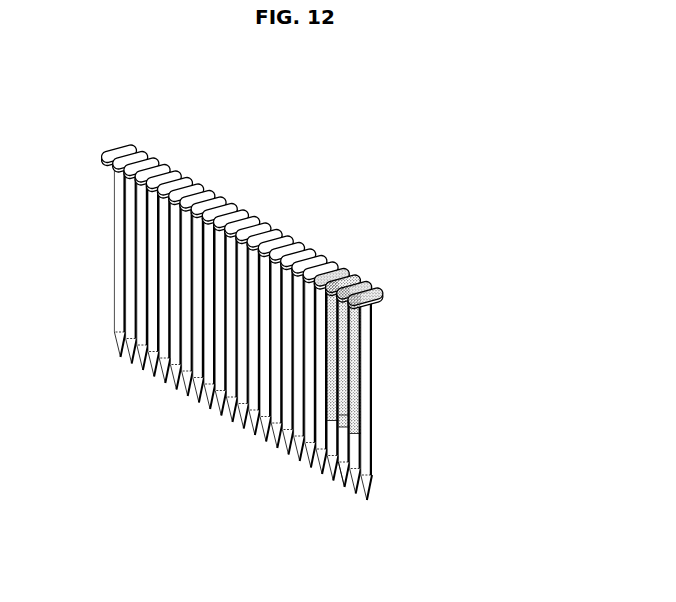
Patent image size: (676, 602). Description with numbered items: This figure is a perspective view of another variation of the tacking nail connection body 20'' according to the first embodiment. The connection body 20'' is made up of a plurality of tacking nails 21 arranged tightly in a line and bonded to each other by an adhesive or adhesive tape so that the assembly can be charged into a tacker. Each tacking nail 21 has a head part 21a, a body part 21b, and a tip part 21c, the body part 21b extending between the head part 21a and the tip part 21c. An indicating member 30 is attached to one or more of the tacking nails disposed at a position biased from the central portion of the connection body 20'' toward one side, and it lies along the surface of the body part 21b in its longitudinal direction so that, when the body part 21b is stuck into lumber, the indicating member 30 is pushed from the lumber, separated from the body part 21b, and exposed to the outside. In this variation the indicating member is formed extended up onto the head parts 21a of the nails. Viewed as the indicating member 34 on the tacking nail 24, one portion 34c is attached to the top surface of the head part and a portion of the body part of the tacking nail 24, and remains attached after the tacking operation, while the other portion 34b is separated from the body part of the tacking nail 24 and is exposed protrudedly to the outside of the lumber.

The tacking nail connection body 20'' is at (212, 270).
The tacking nail 21 is at (439, 394).
The head part 21a is at (412, 301).
The body part 21b is at (372, 395).
The tip part 21c is at (374, 485).
The indicating member 34 is at (351, 292).
The other portion of the indicating member 34b is at (330, 336).
The portion of the indicating member 34c is at (340, 276).
The tacking nail 24 is at (345, 415).
The indicating member 30 is at (340, 450).